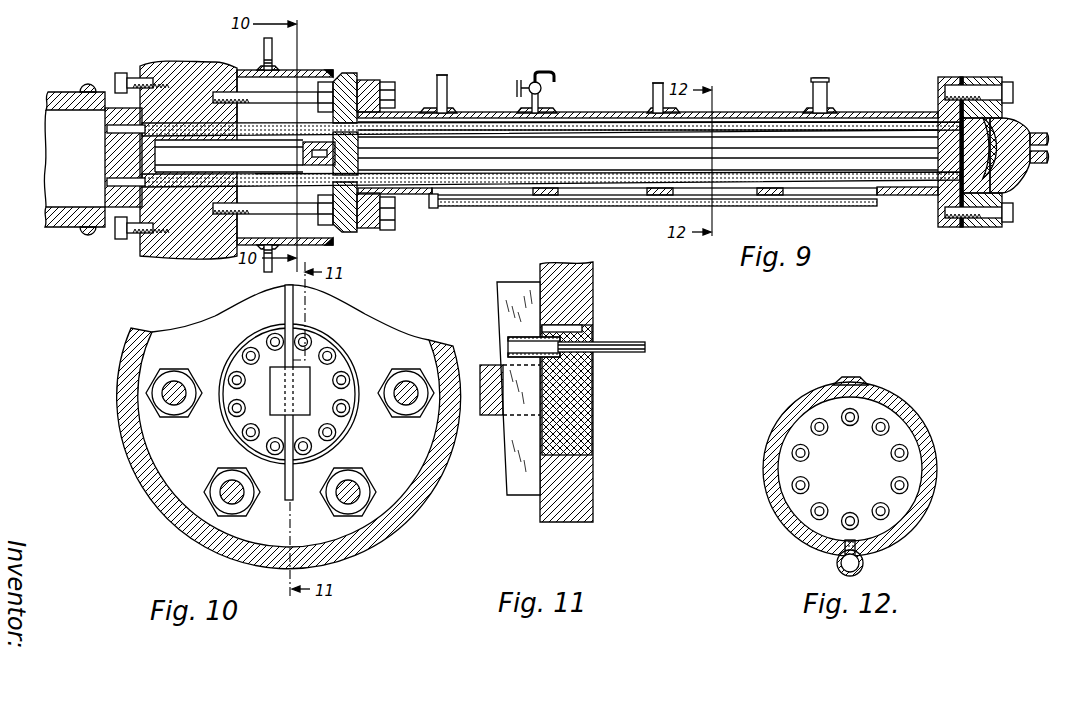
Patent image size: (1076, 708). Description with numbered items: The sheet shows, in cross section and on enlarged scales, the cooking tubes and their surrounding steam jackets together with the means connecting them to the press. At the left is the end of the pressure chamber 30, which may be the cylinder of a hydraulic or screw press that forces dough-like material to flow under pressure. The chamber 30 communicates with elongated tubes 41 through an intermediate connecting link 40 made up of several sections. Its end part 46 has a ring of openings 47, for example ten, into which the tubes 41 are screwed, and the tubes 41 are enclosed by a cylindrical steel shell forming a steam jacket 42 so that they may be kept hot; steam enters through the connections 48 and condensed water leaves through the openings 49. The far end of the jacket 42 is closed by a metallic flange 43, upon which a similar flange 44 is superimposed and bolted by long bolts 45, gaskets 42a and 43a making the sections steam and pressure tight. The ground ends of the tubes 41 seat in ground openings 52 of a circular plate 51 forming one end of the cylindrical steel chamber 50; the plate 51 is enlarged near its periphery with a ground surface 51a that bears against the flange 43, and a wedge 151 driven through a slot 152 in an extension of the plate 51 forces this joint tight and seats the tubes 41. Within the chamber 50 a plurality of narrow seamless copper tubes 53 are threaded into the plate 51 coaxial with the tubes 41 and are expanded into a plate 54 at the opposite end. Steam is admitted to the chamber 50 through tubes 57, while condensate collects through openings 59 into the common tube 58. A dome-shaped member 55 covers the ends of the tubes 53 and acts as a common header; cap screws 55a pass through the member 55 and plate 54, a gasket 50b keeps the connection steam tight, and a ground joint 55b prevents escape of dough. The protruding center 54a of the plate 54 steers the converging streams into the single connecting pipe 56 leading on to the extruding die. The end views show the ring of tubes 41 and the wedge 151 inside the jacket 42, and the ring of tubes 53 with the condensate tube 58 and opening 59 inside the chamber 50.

In FIG. 9, the pressure chamber 30 is at (59, 89).
In FIG. 9, the interconnecting arrangement 40 is at (205, 64).
In FIG. 10, the elongated tubes 41 is at (336, 363).
In FIG. 11, the elongated tubes 41 is at (508, 342).
In FIG. 9, the steam jacket 42 is at (305, 96).
In FIG. 10, the steam jacket 42 is at (396, 528).
In FIG. 9, the gasket 42a is at (330, 247).
In FIG. 9, the flange 43 is at (336, 231).
In FIG. 11, the flange 43 is at (593, 497).
In FIG. 9, the gasket 43a is at (365, 81).
In FIG. 9, the flange 44 is at (377, 231).
In FIG. 9, the bolts 45 is at (330, 78).
In FIG. 9, the part of connecting link 46 is at (107, 183).
In FIG. 9, the openings 47 is at (107, 129).
In FIG. 9, the steam connections 48 is at (263, 47).
In FIG. 9, the discharge openings 49 is at (264, 260).
In FIG. 9, the cylindrical steel chamber 50 is at (598, 112).
In FIG. 12, the cylindrical steel chamber 50 is at (918, 421).
In FIG. 9, the gasket 50b is at (961, 78).
In FIG. 9, the flange part 51 is at (358, 152).
In FIG. 11, the flange part 51 is at (592, 416).
In FIG. 11, the ground surface 51a is at (588, 326).
In FIG. 10, the openings 52 is at (290, 391).
In FIG. 11, the openings 52 is at (547, 358).
In FIG. 9, the narrow metallic tubes 53 is at (883, 122).
In FIG. 11, the narrow metallic tubes 53 is at (632, 341).
In FIG. 12, the narrow metallic tubes 53 is at (908, 451).
In FIG. 9, the plate 54 is at (963, 228).
In FIG. 9, the protruding center 54a is at (997, 140).
In FIG. 9, the dome-shaped member 55 is at (1013, 183).
In FIG. 9, the cap screws 55a is at (1006, 85).
In FIG. 9, the ground joint 55b is at (1003, 109).
In FIG. 9, the connecting pipe 56 is at (1044, 148).
In FIG. 9, the steam tubes 57 is at (826, 90).
In FIG. 9, the condensate tube 58 is at (815, 206).
In FIG. 12, the condensate tube 58 is at (837, 565).
In FIG. 9, the openings 59 is at (773, 198).
In FIG. 12, the openings 59 is at (855, 540).
In FIG. 10, the wedge 151 is at (284, 302).
In FIG. 11, the wedge 151 is at (498, 290).
In FIG. 9, the slot 152 is at (303, 153).
In FIG. 11, the slot 152 is at (508, 412).